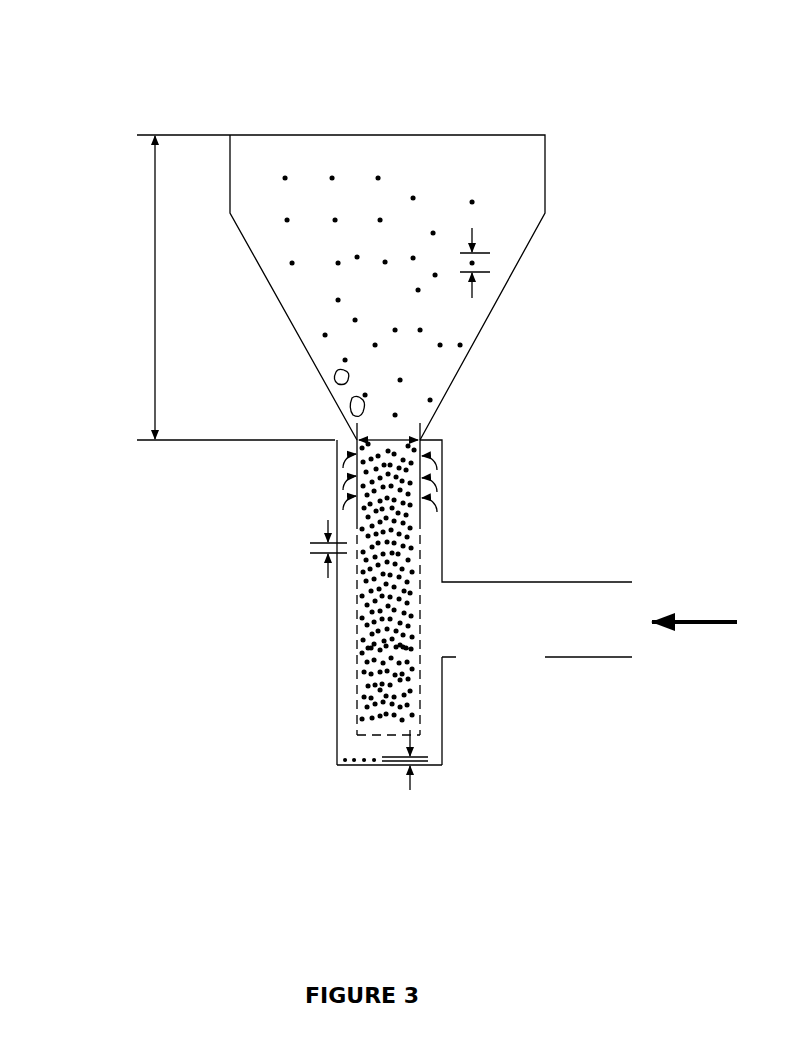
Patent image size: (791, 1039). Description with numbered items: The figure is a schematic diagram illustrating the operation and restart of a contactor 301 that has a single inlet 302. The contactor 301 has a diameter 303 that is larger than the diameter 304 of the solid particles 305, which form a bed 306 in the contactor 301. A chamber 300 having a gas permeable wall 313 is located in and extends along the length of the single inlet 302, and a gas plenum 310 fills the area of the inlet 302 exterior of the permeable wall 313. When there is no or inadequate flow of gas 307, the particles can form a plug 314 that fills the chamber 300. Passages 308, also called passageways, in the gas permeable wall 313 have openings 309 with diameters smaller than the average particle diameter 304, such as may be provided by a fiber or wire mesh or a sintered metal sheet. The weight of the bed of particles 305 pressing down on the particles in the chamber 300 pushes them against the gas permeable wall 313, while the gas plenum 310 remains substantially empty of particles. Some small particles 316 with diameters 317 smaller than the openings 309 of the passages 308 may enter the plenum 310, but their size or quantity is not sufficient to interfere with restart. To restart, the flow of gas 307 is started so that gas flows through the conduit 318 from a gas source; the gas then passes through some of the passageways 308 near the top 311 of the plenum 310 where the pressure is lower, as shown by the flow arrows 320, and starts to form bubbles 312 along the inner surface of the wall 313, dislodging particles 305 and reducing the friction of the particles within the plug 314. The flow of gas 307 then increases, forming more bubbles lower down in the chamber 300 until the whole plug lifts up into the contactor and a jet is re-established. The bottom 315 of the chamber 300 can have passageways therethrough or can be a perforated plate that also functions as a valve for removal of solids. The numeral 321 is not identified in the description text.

The chamber 300 is at (414, 630).
The contactor 301 is at (388, 135).
The single inlet 302 is at (423, 438).
The diameter 303 is at (421, 438).
The particle diameter 304 is at (488, 252).
The solid particles 305 is at (476, 179).
The bed 306 is at (154, 290).
The flow of gas 307 is at (697, 620).
The passages 308 is at (350, 588).
The openings 309 is at (308, 550).
The gas plenum 310 is at (433, 685).
The top of the plenum 311 is at (444, 440).
The bubbles 312 is at (349, 408).
The gas permeable wall 313 is at (425, 522).
The plug 314 is at (359, 586).
The bottom of the chamber 315 is at (362, 737).
The small particles 316 is at (334, 760).
The small particle diameter 317 is at (394, 768).
The conduit 318 is at (573, 659).
The flow arrows 320 is at (423, 485).
The pellet layer 321 is at (359, 519).